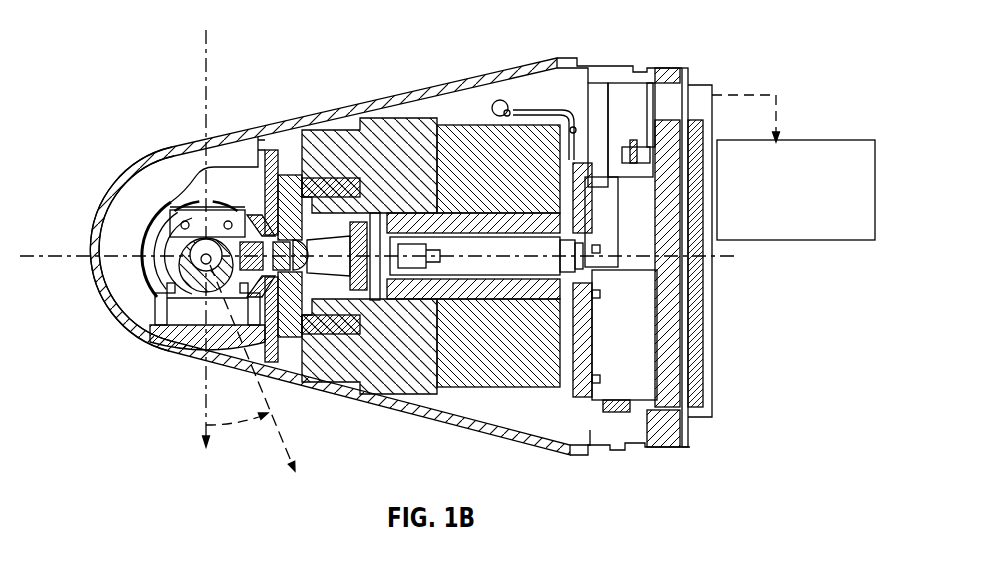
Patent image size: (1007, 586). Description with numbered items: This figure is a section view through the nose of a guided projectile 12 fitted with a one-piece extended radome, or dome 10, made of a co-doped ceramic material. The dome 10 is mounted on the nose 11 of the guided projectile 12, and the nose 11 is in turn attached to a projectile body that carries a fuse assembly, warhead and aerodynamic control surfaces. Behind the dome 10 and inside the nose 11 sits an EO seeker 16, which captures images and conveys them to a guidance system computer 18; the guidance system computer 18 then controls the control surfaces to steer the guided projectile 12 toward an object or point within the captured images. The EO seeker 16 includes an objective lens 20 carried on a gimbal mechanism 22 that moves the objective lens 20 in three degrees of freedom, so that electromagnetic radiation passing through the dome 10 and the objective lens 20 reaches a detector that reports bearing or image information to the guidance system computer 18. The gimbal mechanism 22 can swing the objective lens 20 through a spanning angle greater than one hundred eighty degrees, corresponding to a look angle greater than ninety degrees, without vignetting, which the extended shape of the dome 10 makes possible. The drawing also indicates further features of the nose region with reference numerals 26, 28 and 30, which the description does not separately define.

The dome 10 is at (117, 172).
The nose 11 is at (392, 100).
The guided projectile 12 is at (183, 42).
The EO seeker 16 is at (167, 185).
The guidance system computer 18 is at (802, 140).
The objective lens 20 is at (177, 352).
The gimbal mechanism 22 is at (143, 246).
The nose dome 26 is at (115, 333).
The mounting bracket 28 is at (258, 126).
The gimbal angle theta 2 30 is at (240, 424).